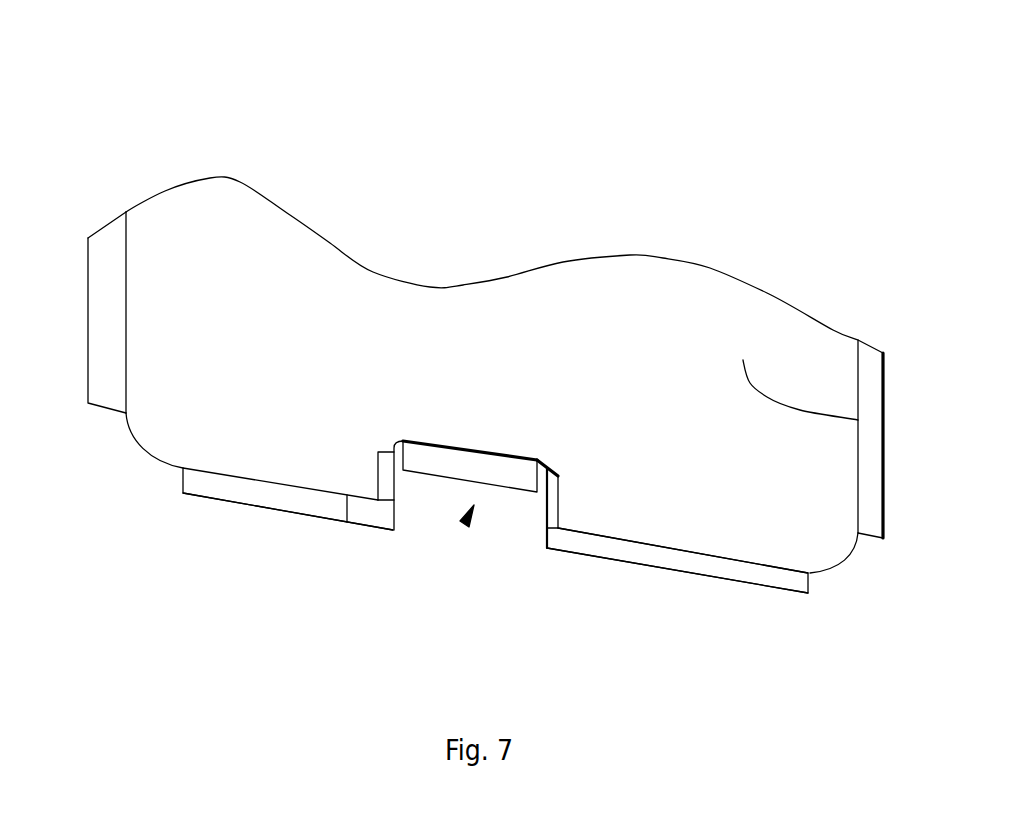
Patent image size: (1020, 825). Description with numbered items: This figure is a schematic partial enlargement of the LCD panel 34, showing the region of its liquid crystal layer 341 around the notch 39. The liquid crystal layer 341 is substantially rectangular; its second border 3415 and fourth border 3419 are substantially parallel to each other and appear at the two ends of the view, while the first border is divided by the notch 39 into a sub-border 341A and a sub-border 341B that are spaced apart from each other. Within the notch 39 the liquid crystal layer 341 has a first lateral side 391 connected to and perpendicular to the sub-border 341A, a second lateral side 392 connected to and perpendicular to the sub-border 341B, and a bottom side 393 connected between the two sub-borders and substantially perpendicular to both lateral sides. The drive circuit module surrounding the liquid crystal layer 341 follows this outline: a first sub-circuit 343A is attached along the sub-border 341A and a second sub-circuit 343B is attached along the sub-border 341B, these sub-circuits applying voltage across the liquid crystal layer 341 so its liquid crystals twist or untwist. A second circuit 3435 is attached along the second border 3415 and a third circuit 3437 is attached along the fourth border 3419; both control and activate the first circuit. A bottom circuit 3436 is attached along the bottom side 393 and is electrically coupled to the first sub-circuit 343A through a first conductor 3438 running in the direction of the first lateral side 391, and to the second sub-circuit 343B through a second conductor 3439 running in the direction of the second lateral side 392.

The LCD panel 34 is at (141, 43).
The liquid crystal layer 341 is at (242, 210).
The fourth border 3419 is at (126, 295).
The third circuit 3437 is at (103, 380).
The second border 3415 is at (743, 360).
The second circuit 3435 is at (868, 523).
The bottom circuit 3436 is at (488, 463).
The bottom side 393 is at (452, 452).
The first lateral side 391 is at (395, 482).
The second lateral side 392 is at (547, 503).
The notch 39 is at (465, 528).
The first sub-circuit 343A is at (203, 482).
The first conductor 3438 is at (377, 477).
The sub-border 341A is at (347, 518).
The second sub-circuit 343B is at (797, 575).
The sub-border 341B is at (602, 538).
The second conductor 3439 is at (560, 503).